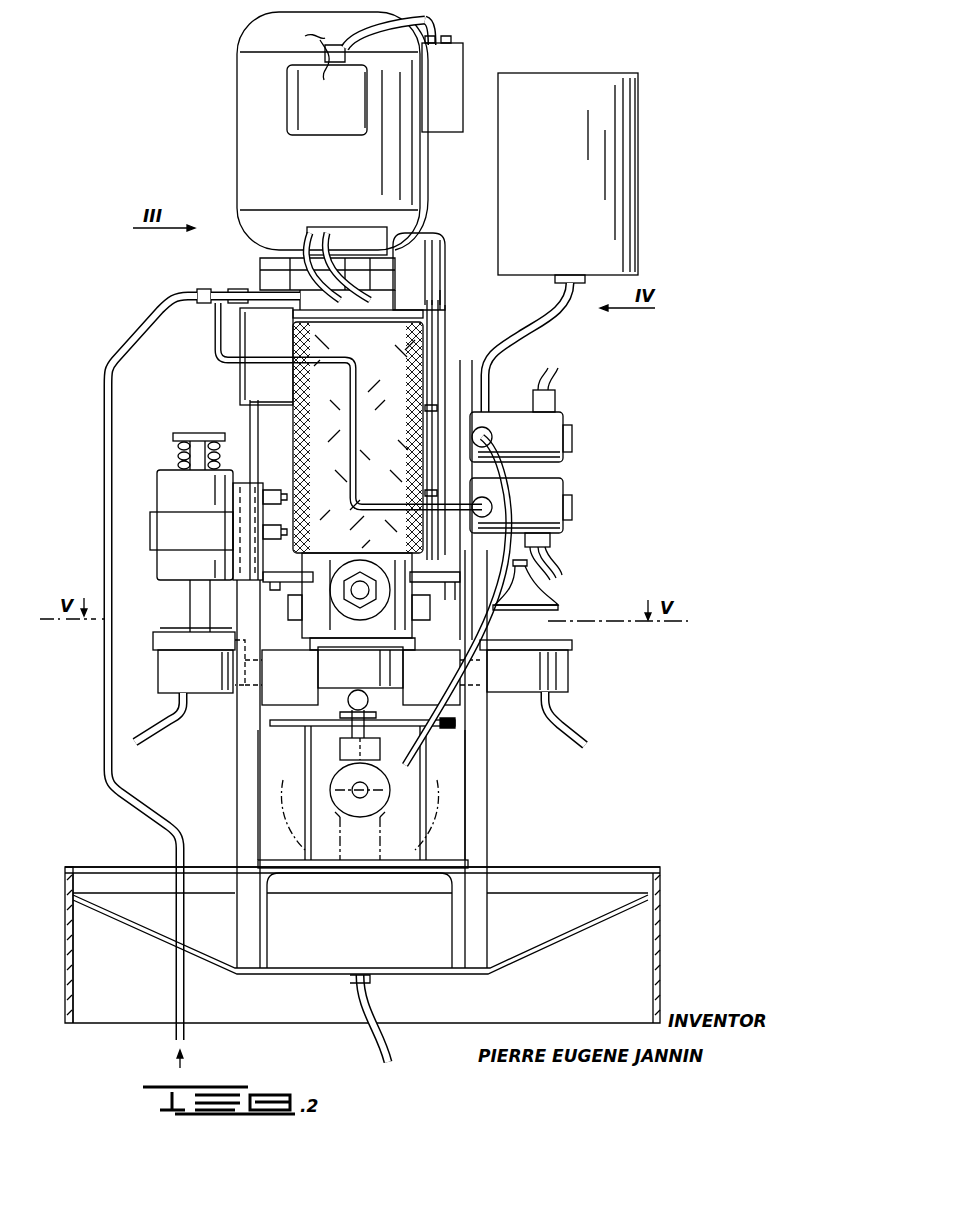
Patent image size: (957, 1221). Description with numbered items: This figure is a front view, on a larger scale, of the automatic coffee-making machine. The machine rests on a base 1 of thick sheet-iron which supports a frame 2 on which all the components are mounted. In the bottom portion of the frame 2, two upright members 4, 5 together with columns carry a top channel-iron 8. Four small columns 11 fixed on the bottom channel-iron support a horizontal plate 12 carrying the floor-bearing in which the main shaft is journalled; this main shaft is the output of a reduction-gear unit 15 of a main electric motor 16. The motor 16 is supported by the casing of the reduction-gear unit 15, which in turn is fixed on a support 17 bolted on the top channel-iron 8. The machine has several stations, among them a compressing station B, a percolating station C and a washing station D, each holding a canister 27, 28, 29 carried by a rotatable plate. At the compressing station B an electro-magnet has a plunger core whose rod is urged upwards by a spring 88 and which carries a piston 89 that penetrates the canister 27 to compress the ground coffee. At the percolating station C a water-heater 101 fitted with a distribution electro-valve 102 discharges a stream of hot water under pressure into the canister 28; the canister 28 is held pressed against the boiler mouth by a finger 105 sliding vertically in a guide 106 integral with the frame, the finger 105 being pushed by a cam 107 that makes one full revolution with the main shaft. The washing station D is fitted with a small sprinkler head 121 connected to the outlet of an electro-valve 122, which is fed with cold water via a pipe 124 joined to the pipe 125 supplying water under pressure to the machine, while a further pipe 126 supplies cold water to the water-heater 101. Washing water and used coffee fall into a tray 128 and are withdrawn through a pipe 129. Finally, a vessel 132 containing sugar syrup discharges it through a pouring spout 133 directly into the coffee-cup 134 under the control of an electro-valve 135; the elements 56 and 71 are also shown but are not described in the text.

The base 1 is at (666, 864).
The frame 2 is at (500, 822).
The upright member 4 is at (240, 792).
The upright member 5 is at (480, 846).
The top channel-iron 8 is at (270, 566).
The small columns 11 is at (300, 767).
The horizontal plate 12 is at (455, 723).
The reduction-gear unit 15 is at (277, 350).
The main electric motor 16 is at (335, 173).
The support 17 is at (250, 426).
The canister 27 is at (152, 671).
The canister 28 is at (309, 687).
The canister 29 is at (578, 699).
The cylinder 56 is at (207, 503).
The rail 71 is at (440, 327).
The spring 88 is at (180, 461).
The piston 89 is at (182, 630).
The water-heater 101 is at (372, 350).
The distribution electro-valve 102 is at (365, 595).
The finger 105 is at (370, 703).
The guide 106 is at (340, 749).
The cam 107 is at (385, 793).
The sprinkler head 121 is at (546, 595).
The electro-valve 122 is at (539, 514).
The pipe 124 is at (209, 338).
The pipe 125 is at (158, 795).
The pipe 126 is at (258, 292).
The tray 128 is at (587, 920).
The pipe 129 is at (374, 1005).
The vessel 132 is at (582, 181).
The pouring spout 133 is at (420, 737).
The coffee-cup 134 is at (297, 815).
The electro-valve 135 is at (539, 446).
The compressing station B is at (203, 673).
The percolating station C is at (366, 673).
The washing station D is at (531, 675).